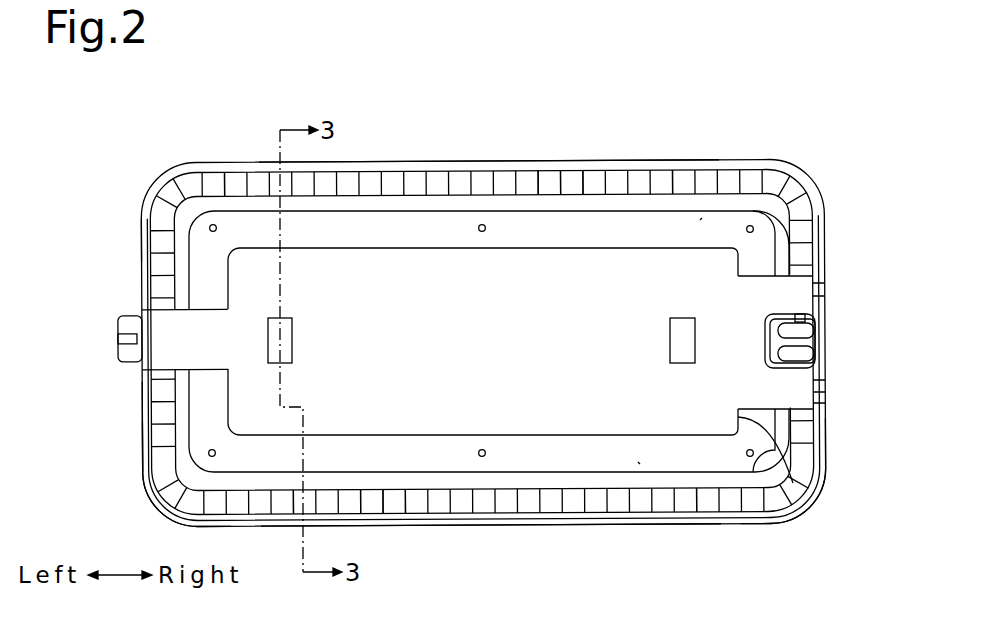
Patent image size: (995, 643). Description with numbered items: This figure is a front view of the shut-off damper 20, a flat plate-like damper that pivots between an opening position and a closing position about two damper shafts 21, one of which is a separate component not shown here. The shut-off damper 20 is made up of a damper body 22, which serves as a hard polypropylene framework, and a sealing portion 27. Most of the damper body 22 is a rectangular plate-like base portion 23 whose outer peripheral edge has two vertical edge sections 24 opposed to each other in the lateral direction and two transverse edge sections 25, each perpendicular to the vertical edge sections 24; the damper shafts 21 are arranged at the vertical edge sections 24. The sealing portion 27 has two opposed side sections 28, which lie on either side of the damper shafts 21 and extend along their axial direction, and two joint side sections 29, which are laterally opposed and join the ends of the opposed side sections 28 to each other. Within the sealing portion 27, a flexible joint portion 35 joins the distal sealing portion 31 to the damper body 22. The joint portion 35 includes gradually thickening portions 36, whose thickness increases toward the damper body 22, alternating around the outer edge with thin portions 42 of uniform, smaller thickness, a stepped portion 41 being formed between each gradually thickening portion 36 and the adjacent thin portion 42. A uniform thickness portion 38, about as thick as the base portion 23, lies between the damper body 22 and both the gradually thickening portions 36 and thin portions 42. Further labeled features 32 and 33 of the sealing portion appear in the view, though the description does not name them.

The shut-off damper 20 is at (459, 337).
The damper shaft 21 is at (143, 309).
The damper body 22 is at (521, 367).
The base portion 23 is at (521, 367).
The vertical edge section 24 is at (228, 392).
The transverse edge section 25 is at (546, 251).
The sealing portion 27 is at (152, 186).
The opposed side section 28 is at (505, 167).
The joint side section 29 is at (145, 417).
The distal sealing portion 31 is at (95, 322).
The upper side wall 32 is at (489, 127).
The lower side wall 33 is at (522, 520).
The joint portion 35 is at (437, 173).
The gradually thickening portion 36 is at (483, 341).
The uniform thickness portion 38 is at (701, 221).
The stepped portion 41 is at (243, 183).
The thin portion 42 is at (597, 173).